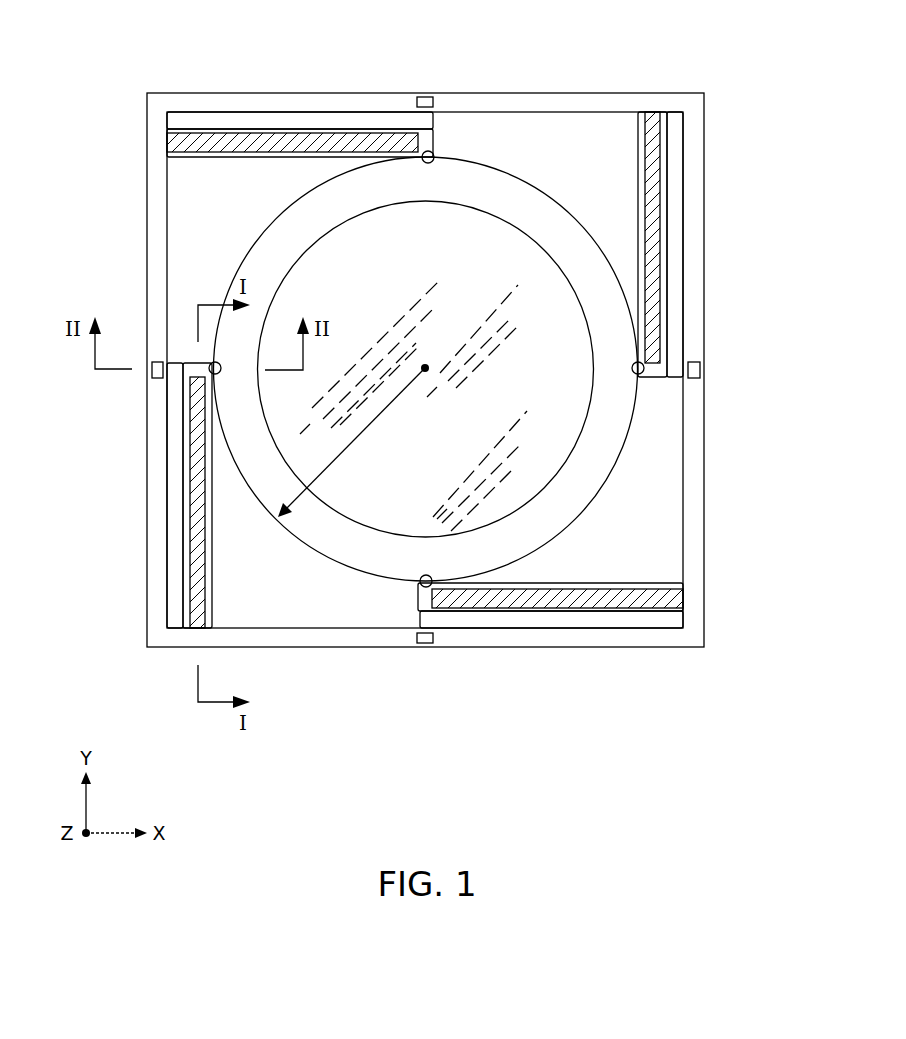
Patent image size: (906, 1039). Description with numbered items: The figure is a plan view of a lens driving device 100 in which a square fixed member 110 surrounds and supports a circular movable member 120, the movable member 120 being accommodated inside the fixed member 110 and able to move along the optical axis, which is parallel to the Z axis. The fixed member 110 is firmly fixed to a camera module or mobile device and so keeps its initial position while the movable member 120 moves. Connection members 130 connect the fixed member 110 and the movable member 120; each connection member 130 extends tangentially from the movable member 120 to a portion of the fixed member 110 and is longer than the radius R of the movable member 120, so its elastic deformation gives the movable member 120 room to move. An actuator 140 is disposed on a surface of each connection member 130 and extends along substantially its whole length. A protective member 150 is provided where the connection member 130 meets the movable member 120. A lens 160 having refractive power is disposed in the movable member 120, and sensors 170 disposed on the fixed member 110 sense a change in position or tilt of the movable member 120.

The lens driving device 100 is at (636, 70).
The fixed member 110 is at (698, 422).
The movable member 120 is at (590, 478).
The connection member 130 is at (515, 610).
The actuator 140 is at (610, 594).
The protective member 150 is at (429, 152).
The lens 160 is at (378, 503).
The sensor 170 is at (157, 378).